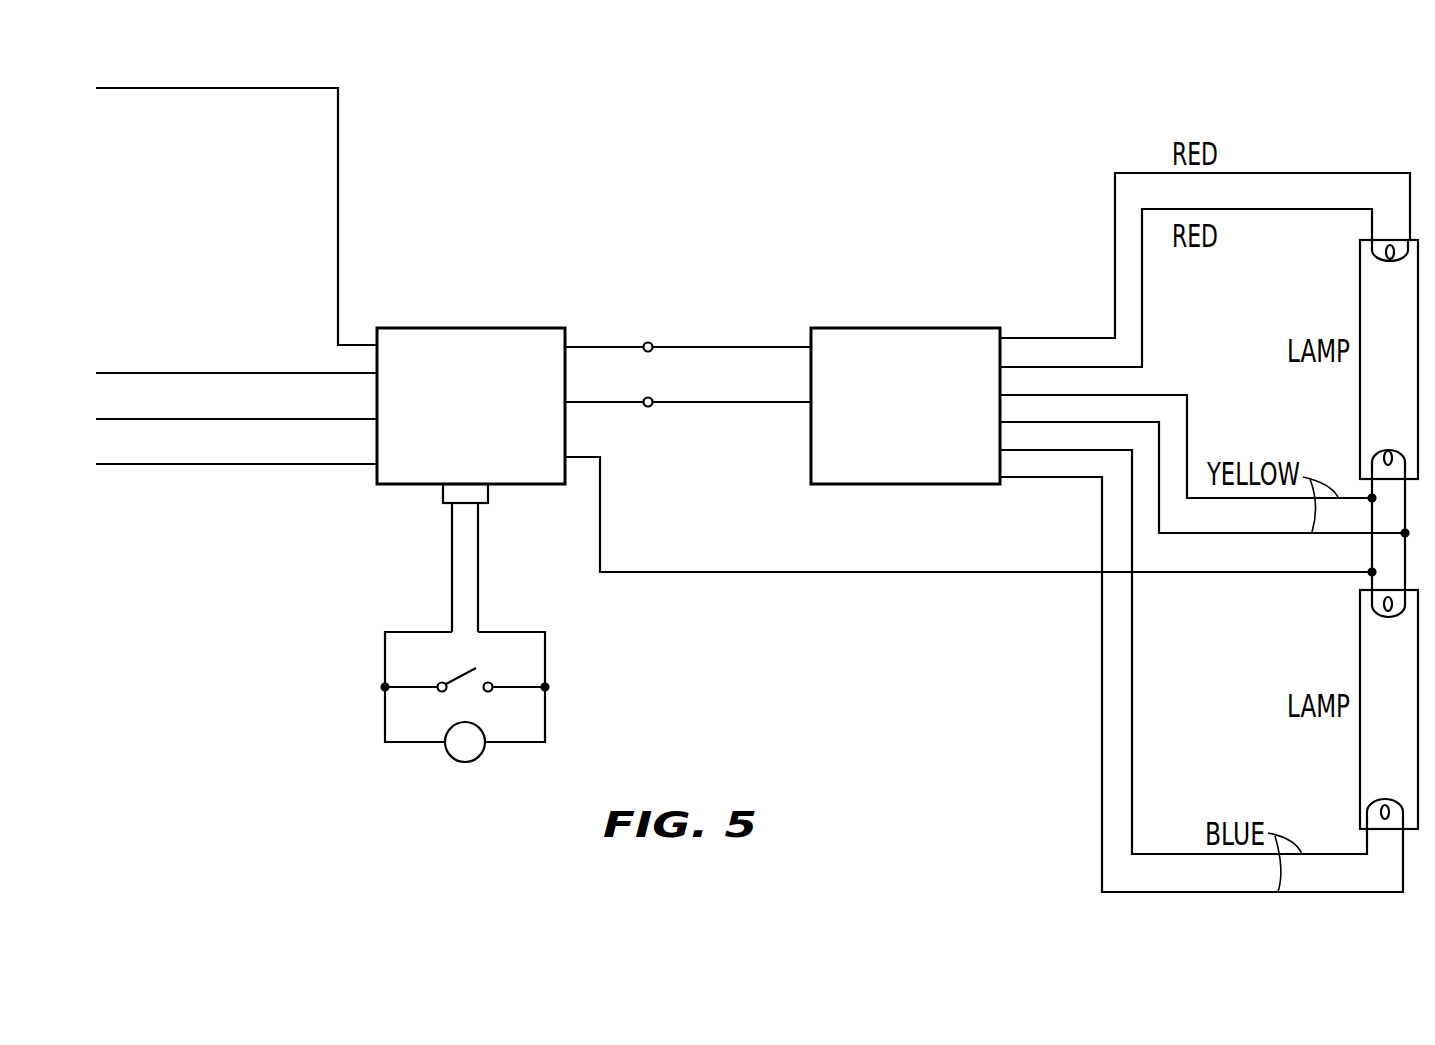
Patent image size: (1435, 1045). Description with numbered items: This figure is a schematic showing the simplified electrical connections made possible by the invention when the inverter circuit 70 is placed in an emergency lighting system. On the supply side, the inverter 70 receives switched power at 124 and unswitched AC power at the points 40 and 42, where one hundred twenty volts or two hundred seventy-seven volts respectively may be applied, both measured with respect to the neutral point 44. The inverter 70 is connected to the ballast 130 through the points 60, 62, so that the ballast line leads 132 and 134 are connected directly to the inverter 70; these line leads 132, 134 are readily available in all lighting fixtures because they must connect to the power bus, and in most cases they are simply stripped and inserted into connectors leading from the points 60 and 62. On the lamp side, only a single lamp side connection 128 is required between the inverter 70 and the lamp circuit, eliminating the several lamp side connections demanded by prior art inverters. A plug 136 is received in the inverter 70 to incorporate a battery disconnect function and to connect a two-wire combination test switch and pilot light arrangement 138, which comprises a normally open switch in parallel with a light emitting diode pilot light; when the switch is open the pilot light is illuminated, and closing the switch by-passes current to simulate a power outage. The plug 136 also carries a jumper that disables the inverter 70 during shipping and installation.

The switched power point 124 is at (150, 90).
The neutral point 44 is at (223, 373).
The 120 volt input point 40 is at (168, 419).
The 277 volt input point 42 is at (227, 466).
The inverter circuit 70 is at (483, 340).
The connection point 60 is at (645, 343).
The connection point 62 is at (650, 407).
The ballast line lead 132 is at (780, 345).
The ballast line lead 134 is at (750, 404).
The ballast 130 is at (885, 328).
The plug 136 is at (488, 505).
The test switch and pilot light arrangement 138 is at (423, 768).
The lamp side connection 128 is at (1365, 577).